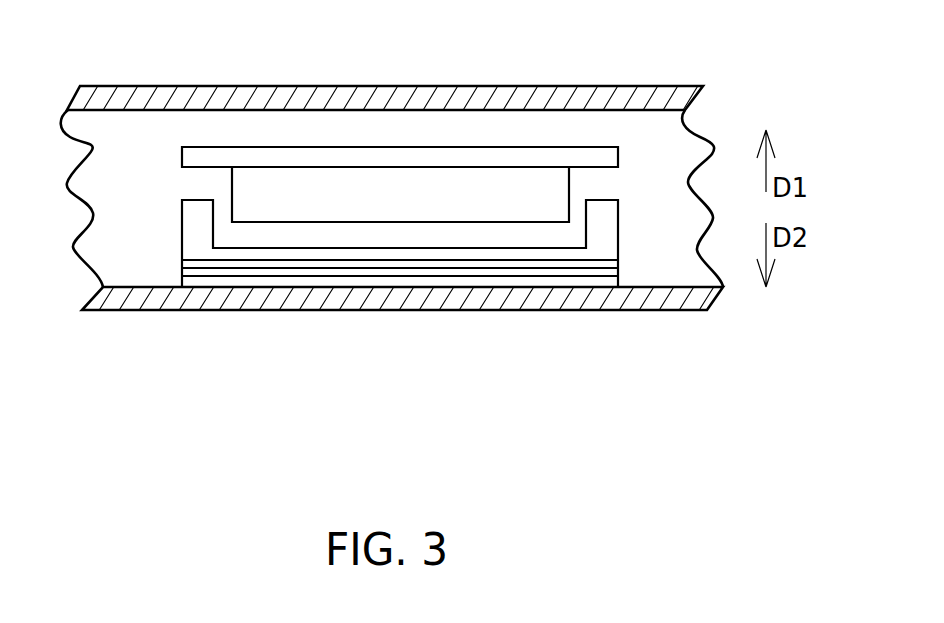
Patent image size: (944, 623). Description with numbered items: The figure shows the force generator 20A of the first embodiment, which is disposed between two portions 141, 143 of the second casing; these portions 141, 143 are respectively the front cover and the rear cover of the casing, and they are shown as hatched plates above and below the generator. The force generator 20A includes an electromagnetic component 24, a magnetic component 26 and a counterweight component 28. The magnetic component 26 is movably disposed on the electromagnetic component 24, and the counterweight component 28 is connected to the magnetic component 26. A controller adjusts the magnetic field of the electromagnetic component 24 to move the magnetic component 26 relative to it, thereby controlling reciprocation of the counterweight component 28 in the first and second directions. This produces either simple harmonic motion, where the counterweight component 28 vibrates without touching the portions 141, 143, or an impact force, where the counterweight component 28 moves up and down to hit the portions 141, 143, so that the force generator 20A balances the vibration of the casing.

The portion of the second casing 141 is at (641, 100).
The portion of the second casing 143 is at (643, 298).
The force generator 20A is at (400, 289).
The electromagnetic component 24 is at (597, 224).
The magnetic component 26 is at (443, 195).
The counterweight component 28 is at (505, 158).